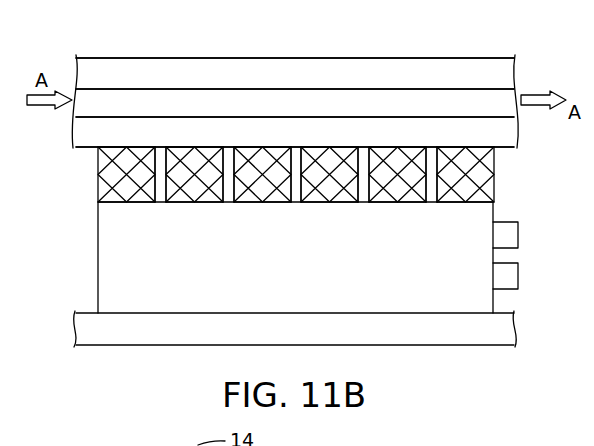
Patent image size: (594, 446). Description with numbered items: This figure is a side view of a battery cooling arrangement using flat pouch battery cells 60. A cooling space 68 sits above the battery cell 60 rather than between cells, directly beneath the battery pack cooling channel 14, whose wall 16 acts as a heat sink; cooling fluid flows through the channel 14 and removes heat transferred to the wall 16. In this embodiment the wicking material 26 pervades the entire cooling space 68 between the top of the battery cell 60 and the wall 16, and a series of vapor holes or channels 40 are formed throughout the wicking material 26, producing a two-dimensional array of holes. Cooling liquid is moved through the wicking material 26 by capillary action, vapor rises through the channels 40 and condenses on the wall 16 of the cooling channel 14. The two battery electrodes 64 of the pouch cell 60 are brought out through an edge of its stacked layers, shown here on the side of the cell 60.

The battery pack cooling channel 14 is at (467, 45).
The wall 16 is at (498, 73).
The wicking material 26 is at (271, 168).
The vapor channel 40 is at (160, 190).
The pouch battery cell 60 is at (291, 284).
The battery electrodes 64 is at (510, 278).
The cooling space 68 is at (119, 178).